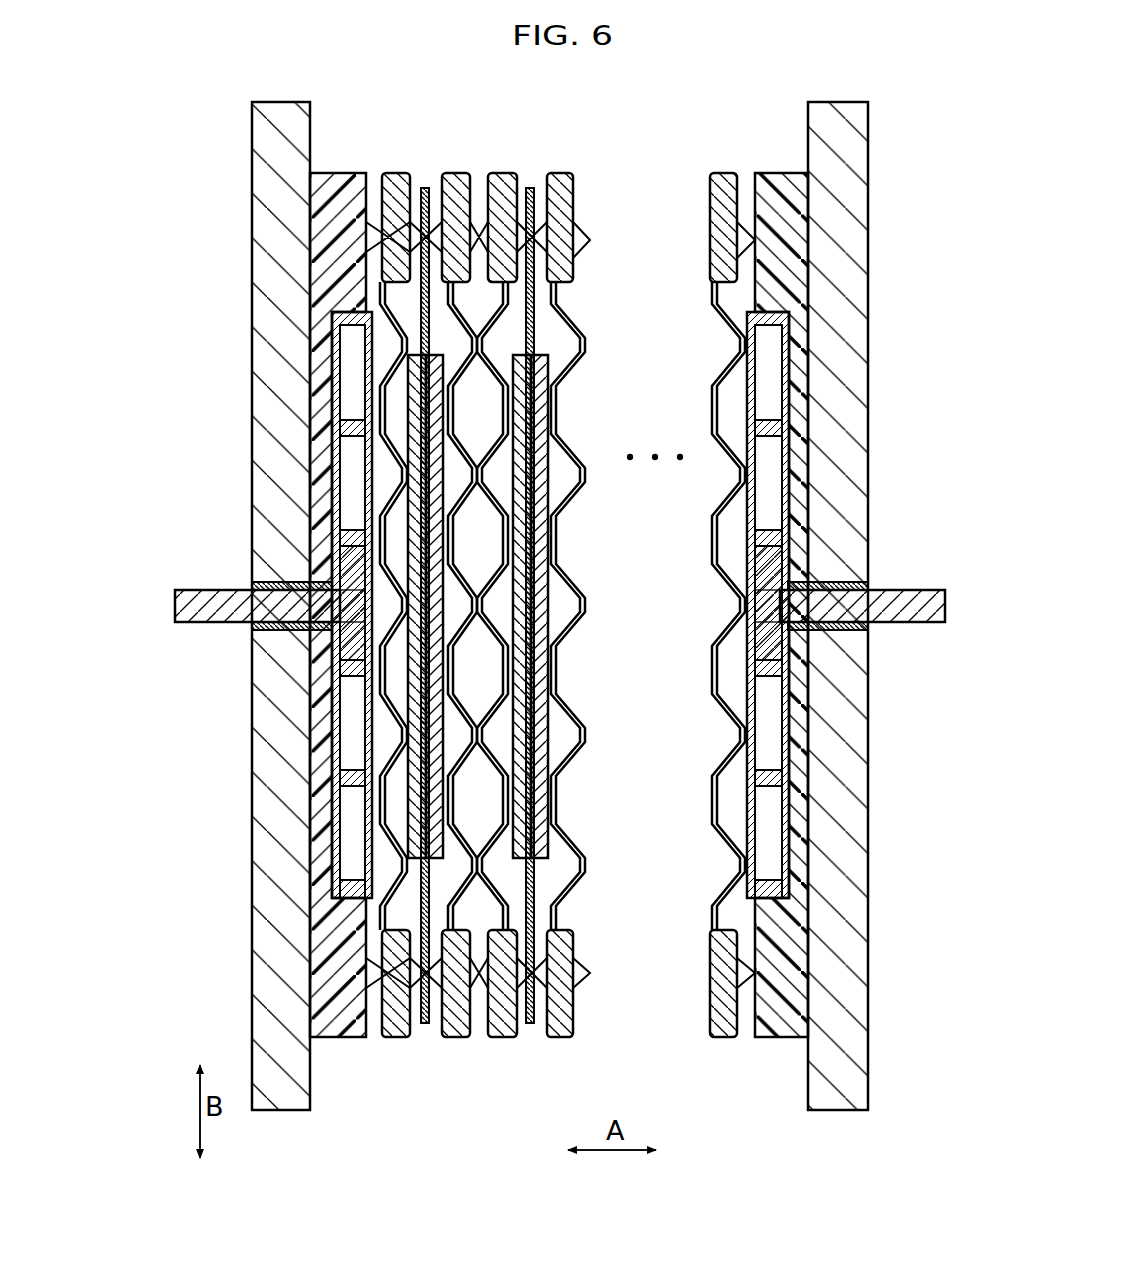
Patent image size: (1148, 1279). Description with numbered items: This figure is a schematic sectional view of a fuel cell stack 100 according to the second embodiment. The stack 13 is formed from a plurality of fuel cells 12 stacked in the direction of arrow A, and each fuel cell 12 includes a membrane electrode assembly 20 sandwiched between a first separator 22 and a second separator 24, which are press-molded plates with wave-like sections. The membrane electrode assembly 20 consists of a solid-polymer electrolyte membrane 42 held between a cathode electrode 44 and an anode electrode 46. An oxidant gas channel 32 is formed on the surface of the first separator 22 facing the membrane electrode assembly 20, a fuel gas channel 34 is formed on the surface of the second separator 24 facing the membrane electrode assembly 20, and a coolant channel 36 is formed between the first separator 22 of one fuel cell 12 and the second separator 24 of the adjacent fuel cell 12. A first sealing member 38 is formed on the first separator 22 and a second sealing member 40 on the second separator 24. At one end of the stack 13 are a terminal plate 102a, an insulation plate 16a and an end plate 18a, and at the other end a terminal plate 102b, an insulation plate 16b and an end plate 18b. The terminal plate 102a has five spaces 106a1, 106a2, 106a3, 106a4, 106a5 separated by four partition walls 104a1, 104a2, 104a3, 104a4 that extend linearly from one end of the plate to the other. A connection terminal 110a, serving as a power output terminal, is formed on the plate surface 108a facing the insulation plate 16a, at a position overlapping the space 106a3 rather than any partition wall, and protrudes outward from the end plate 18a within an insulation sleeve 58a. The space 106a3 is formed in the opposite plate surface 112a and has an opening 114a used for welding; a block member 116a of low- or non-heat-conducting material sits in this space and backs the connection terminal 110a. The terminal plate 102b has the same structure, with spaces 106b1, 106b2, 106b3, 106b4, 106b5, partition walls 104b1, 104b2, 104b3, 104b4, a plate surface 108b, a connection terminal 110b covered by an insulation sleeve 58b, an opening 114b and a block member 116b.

The fuel cell stack 100 is at (640, 84).
The fuel cell 12 is at (530, 579).
The stack 13 is at (560, 575).
The insulation plate 16a is at (330, 930).
The insulation plate 16b is at (790, 930).
The end plate 18a is at (282, 975).
The end plate 18b is at (840, 975).
The membrane electrode assembly 20 is at (531, 605).
The first separator 22 is at (583, 857).
The second separator 24 is at (492, 750).
The oxidant gas channel 32 is at (557, 716).
The fuel gas channel 34 is at (507, 713).
The coolant channel 36 is at (478, 538).
The first sealing member 38 is at (558, 176).
The second sealing member 40 is at (500, 176).
The solid-polymer electrolyte membrane 42 is at (530, 792).
The cathode electrode 44 is at (540, 765).
The anode electrode 46 is at (518, 828).
The insulation sleeve 58a is at (345, 640).
The insulation sleeve 58b is at (772, 640).
The terminal plate 102a is at (256, 596).
The terminal plate 102b is at (860, 596).
The partition wall 104a1 is at (352, 428).
The partition wall 104a2 is at (352, 538).
The partition wall 104a3 is at (352, 670).
The partition wall 104a4 is at (352, 778).
The partition wall 104b1 is at (768, 428).
The partition wall 104b2 is at (768, 538).
The partition wall 104b3 is at (768, 670).
The partition wall 104b4 is at (768, 778).
The space 106a1 is at (350, 342).
The space 106a2 is at (350, 457).
The space 106a3 is at (350, 600).
The space 106a4 is at (350, 740).
The space 106a5 is at (350, 848).
The space 106b1 is at (768, 342).
The space 106b2 is at (768, 457).
The space 106b3 is at (768, 600).
The space 106b4 is at (768, 740).
The space 106b5 is at (768, 848).
The plate surface 108a is at (345, 890).
The plate surface 108b is at (775, 890).
The connection terminal 110a is at (185, 605).
The connection terminal 110b is at (962, 588).
The plate surface 112a is at (395, 598).
The opening 114a is at (348, 660).
The opening 114b is at (770, 660).
The block member 116a is at (300, 585).
The block member 116b is at (820, 585).